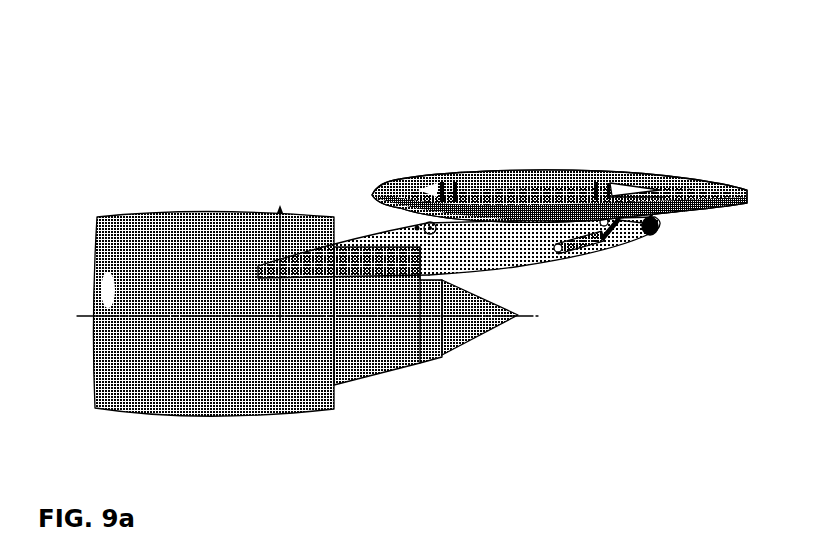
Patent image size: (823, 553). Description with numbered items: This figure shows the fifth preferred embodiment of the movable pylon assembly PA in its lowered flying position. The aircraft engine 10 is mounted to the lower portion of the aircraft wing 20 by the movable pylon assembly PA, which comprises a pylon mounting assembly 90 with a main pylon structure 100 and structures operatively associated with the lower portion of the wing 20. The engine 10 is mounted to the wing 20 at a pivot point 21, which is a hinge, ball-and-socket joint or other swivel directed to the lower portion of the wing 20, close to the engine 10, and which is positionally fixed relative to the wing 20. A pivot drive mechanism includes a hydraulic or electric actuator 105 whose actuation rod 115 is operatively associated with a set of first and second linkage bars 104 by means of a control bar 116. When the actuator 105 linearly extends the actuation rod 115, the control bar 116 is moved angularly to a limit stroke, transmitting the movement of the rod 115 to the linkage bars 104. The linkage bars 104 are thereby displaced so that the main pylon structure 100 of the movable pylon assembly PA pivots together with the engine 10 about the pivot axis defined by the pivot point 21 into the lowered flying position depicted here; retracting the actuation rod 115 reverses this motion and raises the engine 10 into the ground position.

The aircraft engine 10 is at (138, 209).
The aircraft wing 20 is at (504, 170).
The pivot point 21 is at (385, 227).
The movable pylon assembly PA is at (347, 229).
The pylon mounting assembly 90 is at (657, 340).
The main pylon structure 100 is at (515, 270).
The first and second linkage bars 104 is at (636, 179).
The hydraulic or electric actuator 105 is at (579, 258).
The actuation rod 115 is at (609, 251).
The control bar 116 is at (662, 218).